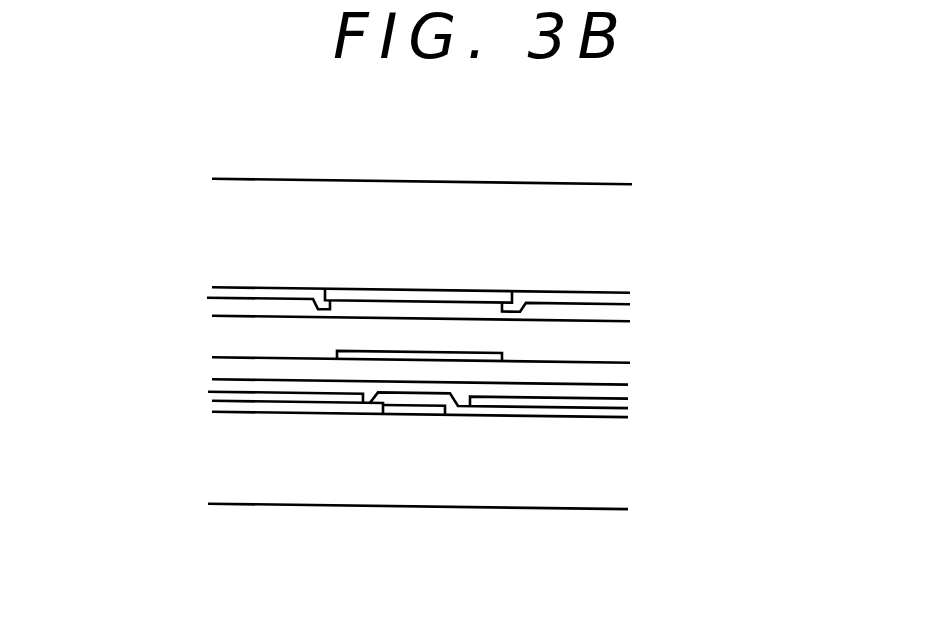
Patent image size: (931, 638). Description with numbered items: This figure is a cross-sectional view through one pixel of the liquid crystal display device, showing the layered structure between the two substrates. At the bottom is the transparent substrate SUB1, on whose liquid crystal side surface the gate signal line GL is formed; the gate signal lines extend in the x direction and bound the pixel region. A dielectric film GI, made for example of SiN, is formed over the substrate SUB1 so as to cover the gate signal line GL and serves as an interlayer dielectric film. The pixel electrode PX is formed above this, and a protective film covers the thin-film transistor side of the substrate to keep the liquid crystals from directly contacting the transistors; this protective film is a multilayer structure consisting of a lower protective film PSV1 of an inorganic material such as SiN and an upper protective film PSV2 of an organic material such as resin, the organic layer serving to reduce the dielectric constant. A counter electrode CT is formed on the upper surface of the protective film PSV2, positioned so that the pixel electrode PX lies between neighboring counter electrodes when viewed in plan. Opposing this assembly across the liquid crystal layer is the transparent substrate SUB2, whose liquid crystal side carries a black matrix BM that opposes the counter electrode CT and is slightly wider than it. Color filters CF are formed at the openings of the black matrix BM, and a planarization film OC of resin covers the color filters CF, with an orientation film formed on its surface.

The transparent substrate SUB2 is at (607, 225).
The color filter CF is at (207, 294).
The black matrix BM is at (441, 291).
The planarization film OC is at (622, 314).
The protective film PSV2 is at (617, 375).
The counter electrode CT is at (388, 351).
The protective film PSV1 is at (218, 387).
The pixel electrode PX is at (623, 400).
The dielectric film GI is at (212, 405).
The gate signal line GL is at (403, 412).
The transparent substrate SUB1 is at (607, 463).